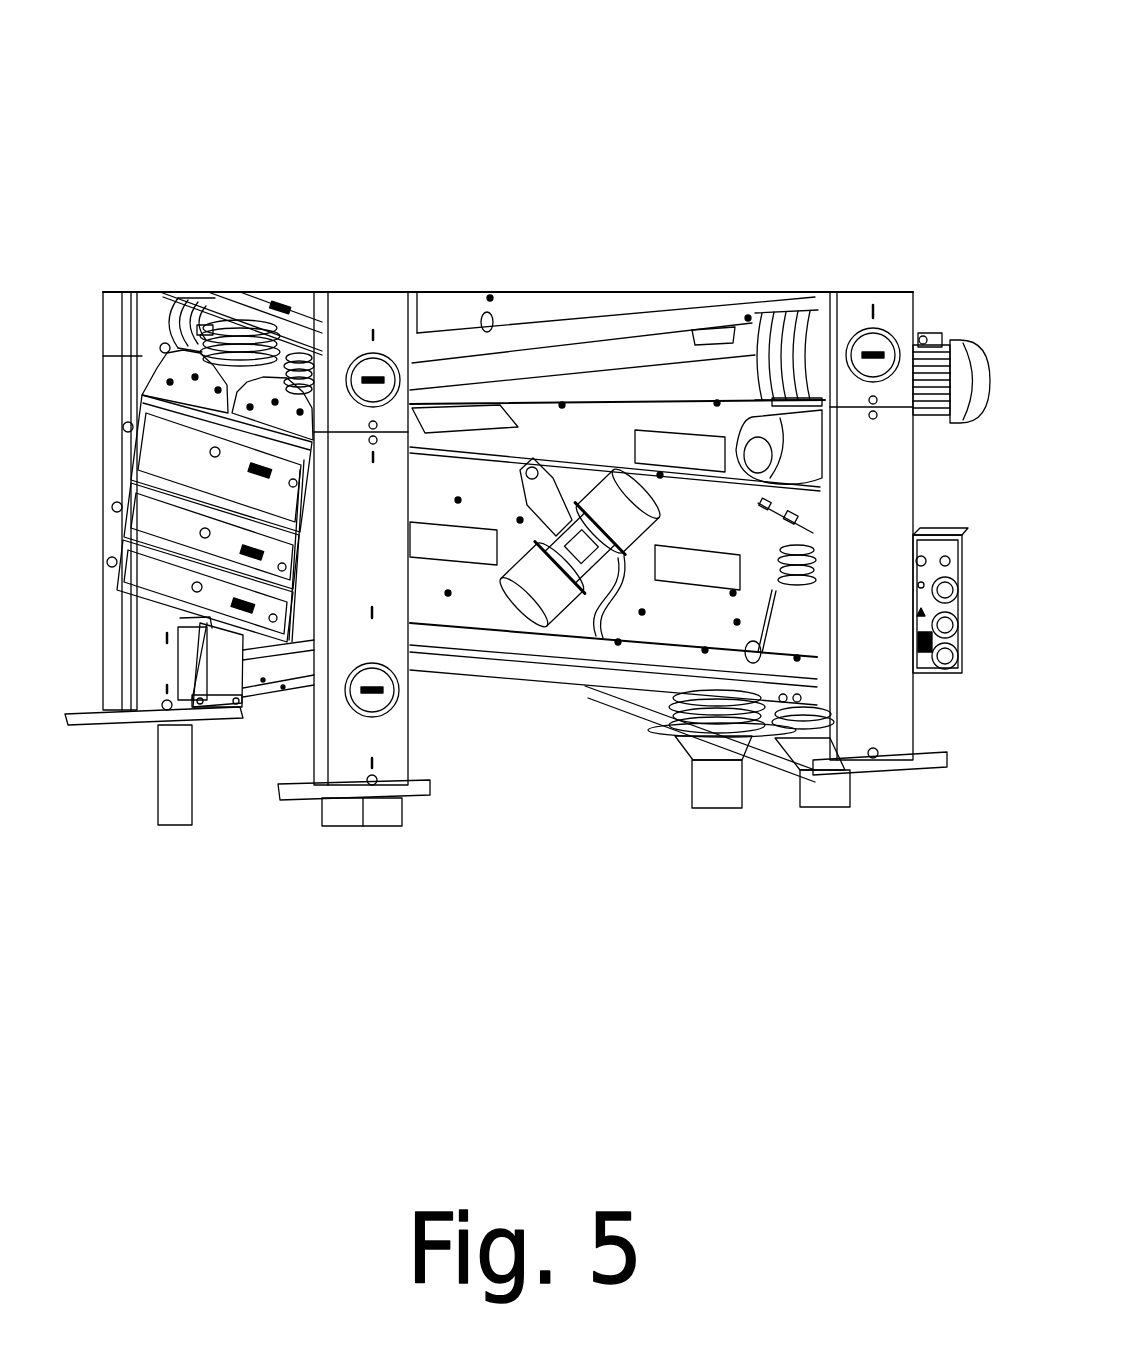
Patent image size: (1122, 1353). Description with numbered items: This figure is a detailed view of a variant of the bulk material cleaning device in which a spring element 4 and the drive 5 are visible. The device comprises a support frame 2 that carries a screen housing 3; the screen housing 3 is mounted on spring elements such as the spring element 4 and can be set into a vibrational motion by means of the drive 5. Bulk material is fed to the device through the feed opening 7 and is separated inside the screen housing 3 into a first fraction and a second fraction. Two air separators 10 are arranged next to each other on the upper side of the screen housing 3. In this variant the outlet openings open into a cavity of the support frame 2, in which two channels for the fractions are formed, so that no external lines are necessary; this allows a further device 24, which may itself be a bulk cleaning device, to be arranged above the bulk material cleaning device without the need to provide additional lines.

The support frame 2 is at (842, 628).
The screen housing 3 is at (660, 623).
The spring element 4 is at (792, 580).
The drive 5 is at (558, 590).
The feed opening 7 is at (299, 365).
The air separator 10 is at (613, 375).
The further device 24 is at (533, 320).